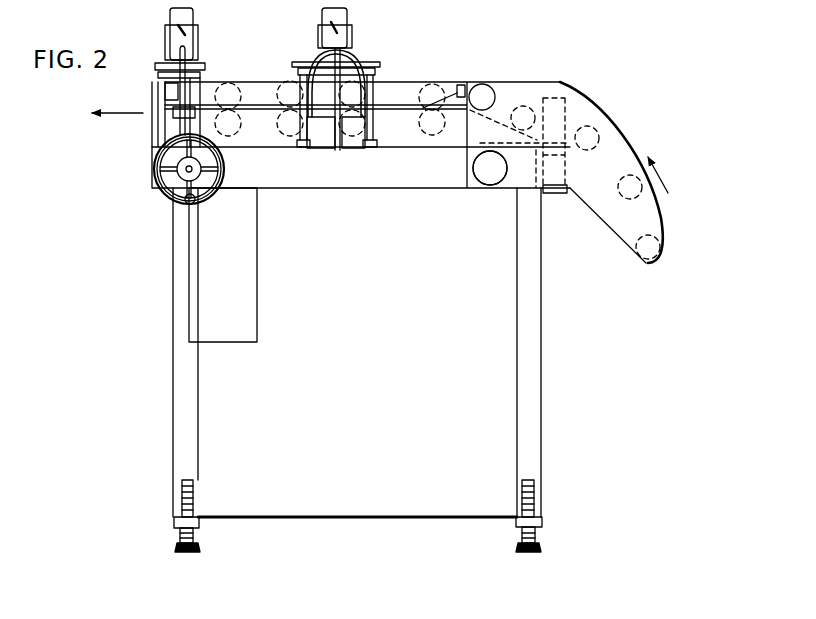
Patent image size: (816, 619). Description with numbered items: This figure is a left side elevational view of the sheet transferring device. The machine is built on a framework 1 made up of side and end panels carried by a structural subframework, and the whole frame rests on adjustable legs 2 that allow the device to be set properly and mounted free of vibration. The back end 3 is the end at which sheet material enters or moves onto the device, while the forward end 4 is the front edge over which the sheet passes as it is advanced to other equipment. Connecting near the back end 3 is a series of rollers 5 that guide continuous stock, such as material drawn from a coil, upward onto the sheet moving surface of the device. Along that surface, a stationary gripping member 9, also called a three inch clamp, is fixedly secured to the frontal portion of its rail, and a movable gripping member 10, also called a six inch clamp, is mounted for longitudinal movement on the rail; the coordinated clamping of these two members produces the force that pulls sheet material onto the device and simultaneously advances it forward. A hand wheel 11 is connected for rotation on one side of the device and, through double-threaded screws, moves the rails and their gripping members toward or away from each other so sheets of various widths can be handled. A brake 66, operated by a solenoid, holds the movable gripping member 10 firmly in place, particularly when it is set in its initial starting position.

The framework 1 is at (385, 518).
The adjustable legs 2 is at (178, 547).
The back end 3 is at (670, 182).
The forward end 4 is at (117, 102).
The rollers 5 is at (641, 255).
The stationary gripping member 9 is at (206, 52).
The movable gripping member 10 is at (364, 44).
The hand wheel 11 is at (167, 196).
The brake 66 is at (473, 181).